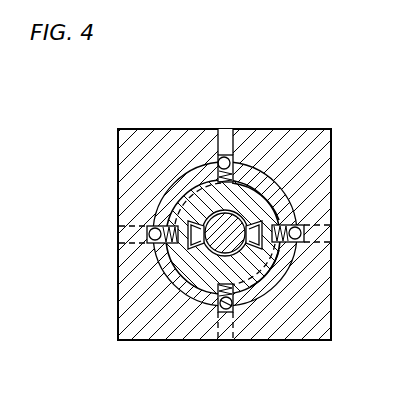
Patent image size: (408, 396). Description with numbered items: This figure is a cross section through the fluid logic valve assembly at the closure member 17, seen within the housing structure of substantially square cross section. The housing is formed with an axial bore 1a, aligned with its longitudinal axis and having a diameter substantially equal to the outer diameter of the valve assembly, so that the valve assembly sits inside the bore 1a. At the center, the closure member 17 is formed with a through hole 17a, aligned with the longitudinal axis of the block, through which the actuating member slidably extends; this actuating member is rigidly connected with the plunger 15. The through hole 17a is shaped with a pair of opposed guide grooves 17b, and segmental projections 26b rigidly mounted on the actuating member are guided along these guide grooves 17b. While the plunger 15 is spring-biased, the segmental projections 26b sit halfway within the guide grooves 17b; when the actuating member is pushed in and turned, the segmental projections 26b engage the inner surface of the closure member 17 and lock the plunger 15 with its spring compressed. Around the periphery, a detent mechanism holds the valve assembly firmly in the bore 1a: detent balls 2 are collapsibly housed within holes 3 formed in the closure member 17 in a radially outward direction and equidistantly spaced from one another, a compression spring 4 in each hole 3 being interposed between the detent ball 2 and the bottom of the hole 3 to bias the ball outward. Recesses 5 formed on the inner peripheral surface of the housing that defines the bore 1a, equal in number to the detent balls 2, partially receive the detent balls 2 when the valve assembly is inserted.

The axial bore 1a is at (196, 172).
The closure member 17 is at (260, 180).
The through hole 17a is at (248, 205).
The guide grooves 17b is at (264, 244).
The plunger 15 is at (236, 300).
The segmental projections 26b is at (165, 263).
The detent recesses 5 is at (218, 310).
The detent balls 2 is at (223, 313).
The detent holes 3 is at (240, 308).
The compression spring 4 is at (233, 292).